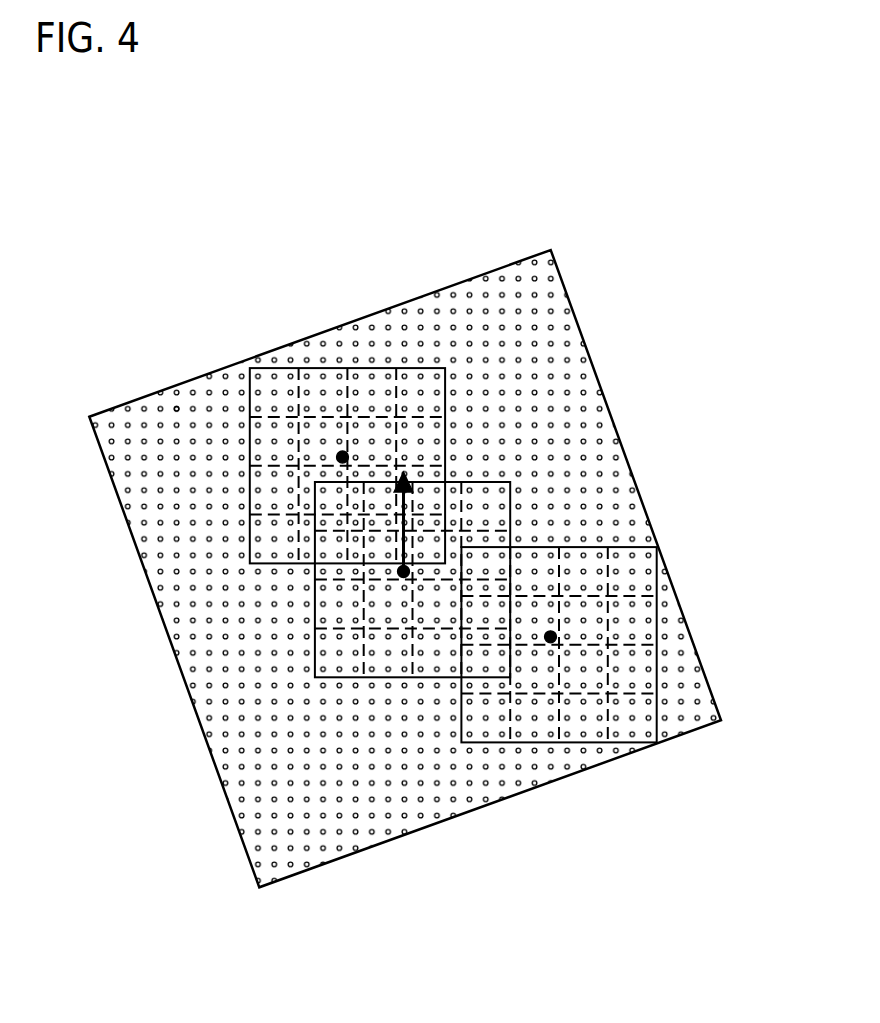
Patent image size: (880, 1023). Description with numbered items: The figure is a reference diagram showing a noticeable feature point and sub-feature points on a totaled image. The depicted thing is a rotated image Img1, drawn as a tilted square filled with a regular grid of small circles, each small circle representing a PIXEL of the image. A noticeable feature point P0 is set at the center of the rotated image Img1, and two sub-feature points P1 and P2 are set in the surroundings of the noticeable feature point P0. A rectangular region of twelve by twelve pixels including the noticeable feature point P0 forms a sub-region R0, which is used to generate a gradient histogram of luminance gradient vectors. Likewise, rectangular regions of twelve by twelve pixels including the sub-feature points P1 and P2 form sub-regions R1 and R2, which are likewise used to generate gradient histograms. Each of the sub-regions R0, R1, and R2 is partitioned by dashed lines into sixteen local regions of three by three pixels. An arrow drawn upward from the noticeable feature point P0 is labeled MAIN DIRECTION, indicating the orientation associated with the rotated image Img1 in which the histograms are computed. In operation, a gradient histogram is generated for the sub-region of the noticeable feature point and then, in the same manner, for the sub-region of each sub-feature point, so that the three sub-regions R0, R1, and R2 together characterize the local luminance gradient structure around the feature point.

The rotated image Img1 is at (233, 367).
The pixel PIXEL is at (175, 408).
The sub-region R1 is at (445, 422).
The sub-region R0 is at (492, 482).
The sub-region R2 is at (657, 677).
The sub-feature point P1 is at (343, 457).
The noticeable feature point P0 is at (403, 571).
The sub-feature point P2 is at (550, 641).
The main direction arrow MAIN DIRECTION is at (403, 517).